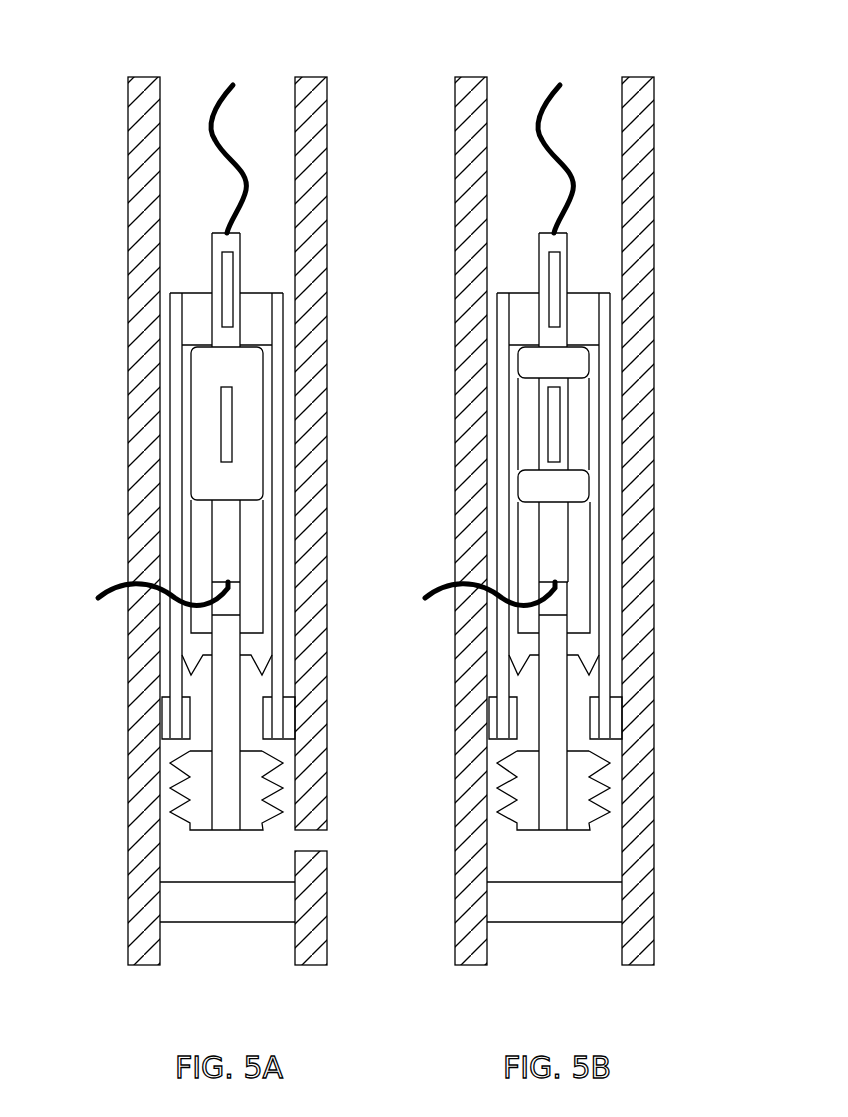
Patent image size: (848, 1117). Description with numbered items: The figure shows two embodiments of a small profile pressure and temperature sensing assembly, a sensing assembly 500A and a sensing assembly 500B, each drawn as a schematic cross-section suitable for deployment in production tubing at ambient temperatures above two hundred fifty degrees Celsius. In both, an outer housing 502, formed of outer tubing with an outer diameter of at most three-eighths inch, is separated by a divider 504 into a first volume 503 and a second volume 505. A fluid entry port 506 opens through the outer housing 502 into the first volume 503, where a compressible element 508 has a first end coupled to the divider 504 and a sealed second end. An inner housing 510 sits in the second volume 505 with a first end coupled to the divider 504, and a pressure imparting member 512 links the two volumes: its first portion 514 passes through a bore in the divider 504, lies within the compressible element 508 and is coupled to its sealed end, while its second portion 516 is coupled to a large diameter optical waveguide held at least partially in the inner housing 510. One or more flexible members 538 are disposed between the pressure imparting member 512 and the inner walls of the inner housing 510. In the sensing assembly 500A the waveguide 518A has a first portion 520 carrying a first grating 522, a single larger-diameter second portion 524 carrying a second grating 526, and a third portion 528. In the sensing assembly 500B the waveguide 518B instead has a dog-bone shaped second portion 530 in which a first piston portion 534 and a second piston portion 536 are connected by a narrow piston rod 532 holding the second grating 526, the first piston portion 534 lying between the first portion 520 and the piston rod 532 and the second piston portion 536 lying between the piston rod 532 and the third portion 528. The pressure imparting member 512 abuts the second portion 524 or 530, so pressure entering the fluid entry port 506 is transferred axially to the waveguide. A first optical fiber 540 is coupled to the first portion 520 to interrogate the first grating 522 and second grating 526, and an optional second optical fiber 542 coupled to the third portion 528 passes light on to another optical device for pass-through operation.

In FIG. 5A, the small profile pressure and temperature sensing assembly 500A is at (112, 105).
In FIG. 5B, the small profile pressure and temperature sensing assembly 500B is at (440, 98).
In FIG. 5A, the outer housing 502 is at (318, 905).
In FIG. 5A, the first volume 503 is at (178, 842).
In FIG. 5A, the divider 504 is at (263, 715).
In FIG. 5A, the second volume 505 is at (259, 95).
In FIG. 5A, the fluid entry port 506 is at (318, 842).
In FIG. 5A, the compressible element 508 is at (258, 760).
In FIG. 5A, the inner housing 510 is at (275, 487).
In FIG. 5A, the pressure imparting member 512 is at (228, 745).
In FIG. 5A, the first portion of pressure imparting member 514 is at (223, 773).
In FIG. 5A, the second portion of pressure imparting member 516 is at (252, 587).
In FIG. 5A, the large diameter optical waveguide 518A is at (75, 312).
In FIG. 5B, the large diameter optical waveguide 518B is at (745, 315).
In FIG. 5A, the first portion of waveguide 520 is at (216, 318).
In FIG. 5B, the first portion of waveguide 520 is at (565, 318).
In FIG. 5A, the first grating 522 is at (230, 268).
In FIG. 5B, the first grating 522 is at (555, 277).
In FIG. 5A, the second portion of waveguide 524 is at (205, 428).
In FIG. 5A, the second grating 526 is at (228, 418).
In FIG. 5B, the second grating 526 is at (555, 430).
In FIG. 5A, the third portion of waveguide 528 is at (225, 540).
In FIG. 5B, the third portion of waveguide 528 is at (580, 573).
In FIG. 5B, the second portion of waveguide 530 is at (641, 424).
In FIG. 5B, the piston rod 532 is at (565, 420).
In FIG. 5B, the first piston portion 534 is at (572, 363).
In FIG. 5B, the second piston portion 536 is at (565, 489).
In FIG. 5A, the flexible member 538 is at (268, 668).
In FIG. 5A, the first optical fiber 540 is at (242, 183).
In FIG. 5A, the second optical fiber 542 is at (113, 598).